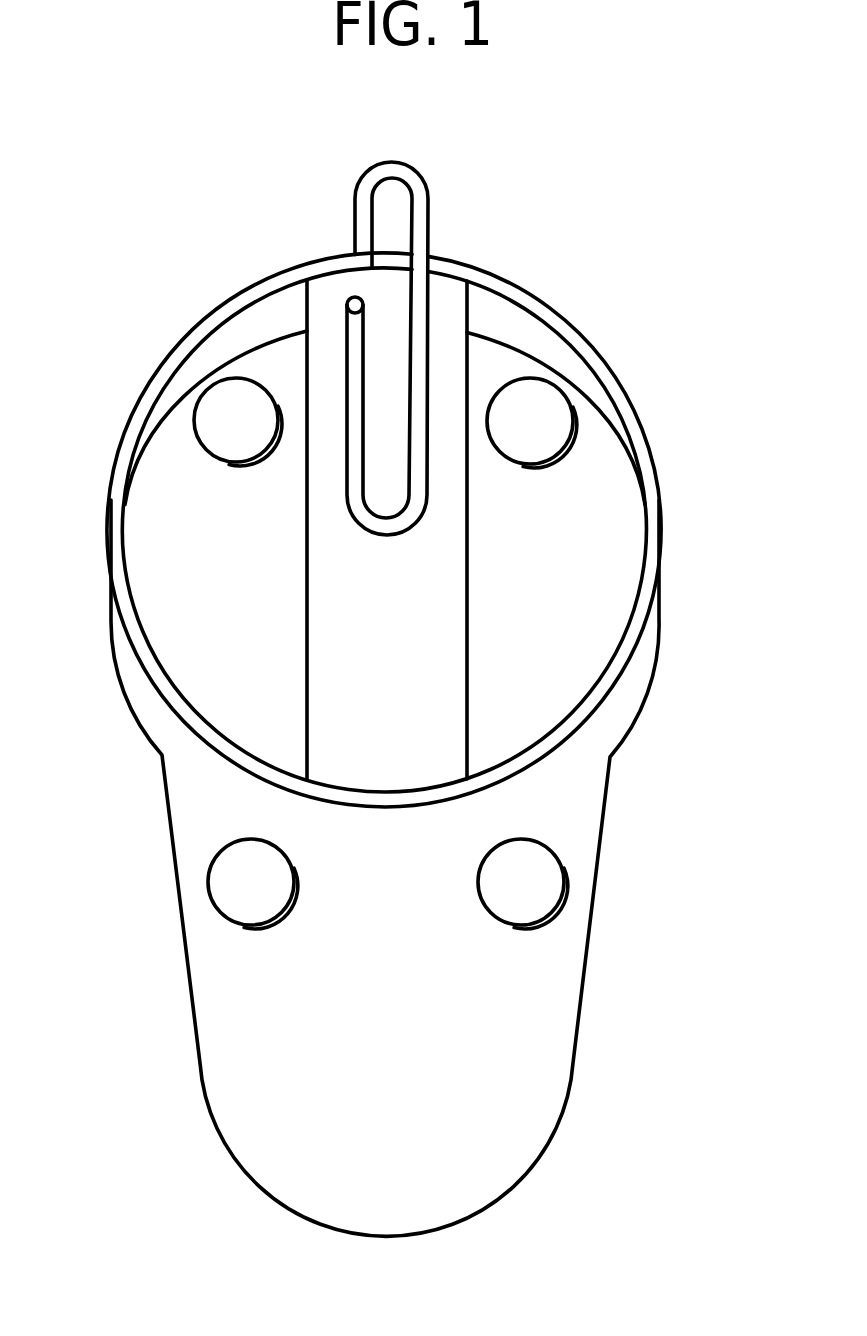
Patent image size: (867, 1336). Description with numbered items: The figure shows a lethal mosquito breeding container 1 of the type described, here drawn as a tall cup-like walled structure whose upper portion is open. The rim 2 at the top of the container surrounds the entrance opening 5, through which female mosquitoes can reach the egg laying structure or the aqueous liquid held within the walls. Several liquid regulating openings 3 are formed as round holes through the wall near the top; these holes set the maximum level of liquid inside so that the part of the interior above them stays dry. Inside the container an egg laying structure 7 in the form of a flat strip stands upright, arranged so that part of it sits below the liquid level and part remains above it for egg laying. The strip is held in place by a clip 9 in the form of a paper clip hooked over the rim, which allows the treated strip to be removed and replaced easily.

The body 1 is at (448, 1092).
The ring cap 2 is at (557, 588).
The holes 3 is at (233, 388).
The cavity 5 is at (601, 553).
The strip 7 is at (453, 353).
The hook 9 is at (428, 228).